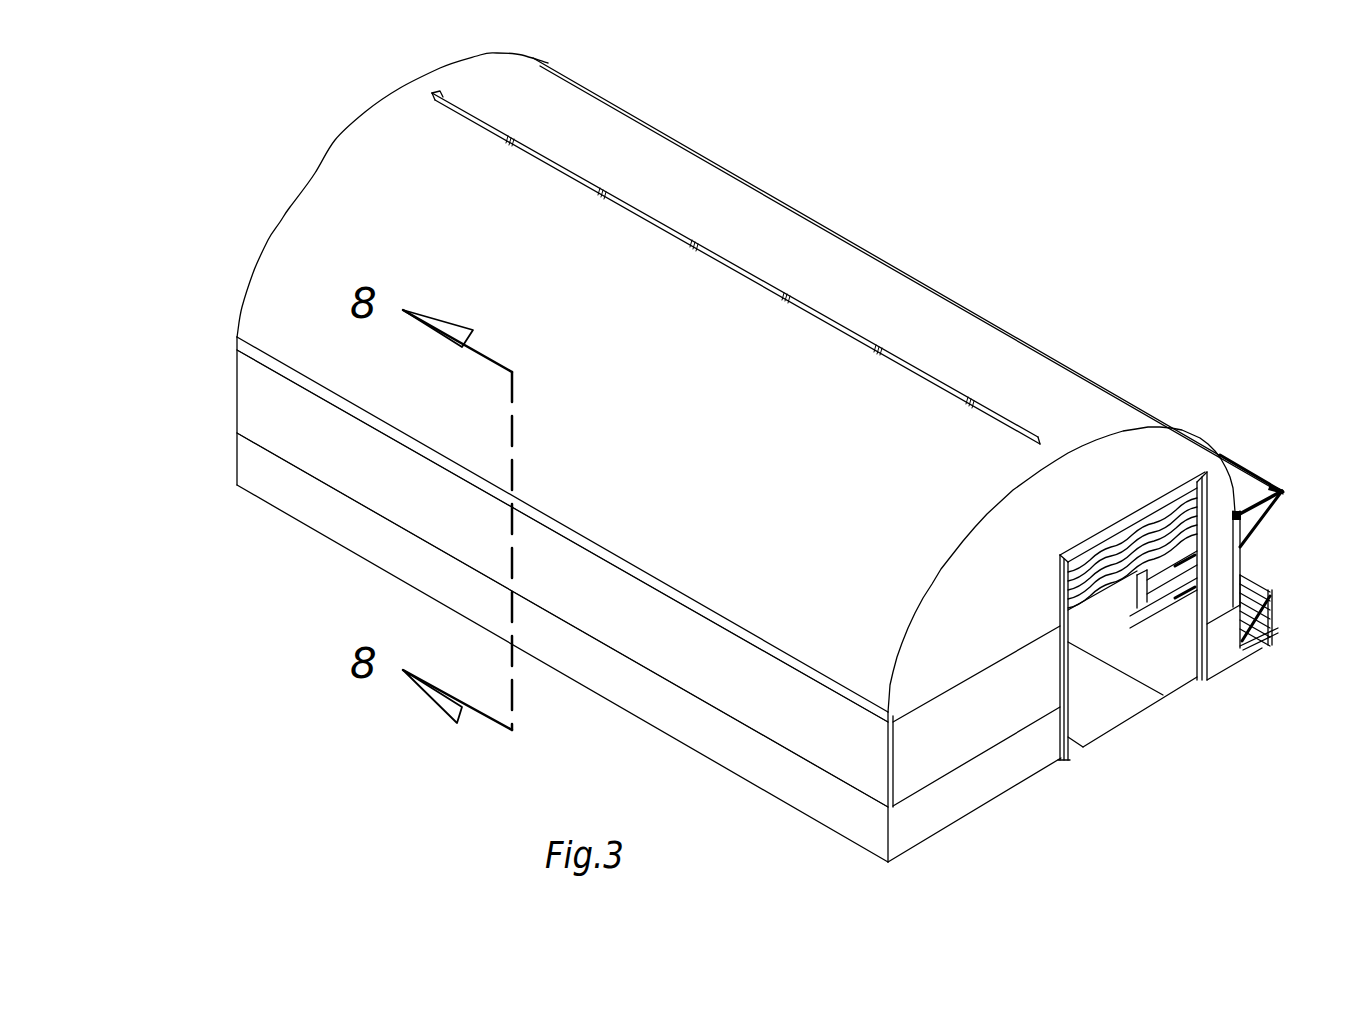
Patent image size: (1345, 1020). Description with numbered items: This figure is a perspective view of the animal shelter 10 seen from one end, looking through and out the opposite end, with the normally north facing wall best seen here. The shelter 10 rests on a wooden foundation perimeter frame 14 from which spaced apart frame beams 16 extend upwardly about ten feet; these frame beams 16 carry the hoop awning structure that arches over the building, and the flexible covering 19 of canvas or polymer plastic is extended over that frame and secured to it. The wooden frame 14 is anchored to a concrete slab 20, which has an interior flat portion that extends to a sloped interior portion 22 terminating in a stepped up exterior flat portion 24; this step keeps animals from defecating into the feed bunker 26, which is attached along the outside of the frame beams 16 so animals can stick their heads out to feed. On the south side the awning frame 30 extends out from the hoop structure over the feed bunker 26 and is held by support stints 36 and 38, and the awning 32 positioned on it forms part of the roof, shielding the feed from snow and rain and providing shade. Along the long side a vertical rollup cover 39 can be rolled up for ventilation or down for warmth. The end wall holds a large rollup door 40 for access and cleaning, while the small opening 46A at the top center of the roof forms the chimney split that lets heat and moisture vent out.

The animal shelter 10 is at (1002, 165).
The wooden foundation perimeter frame 14 is at (1187, 612).
The frame beams 16 is at (1135, 592).
The covering 19 is at (290, 229).
The concrete slab 20 is at (1130, 708).
The sloped interior portion 22 is at (1150, 668).
The stepped up exterior flat portion 24 is at (1255, 635).
The feed bunker 26 is at (1260, 593).
The awning frame 30 is at (1262, 484).
The awning 32 is at (1237, 465).
The support stint 36 is at (1253, 510).
The support stint 38 is at (1248, 537).
The vertical rollup cover 39 is at (252, 407).
The rollup door 40 is at (1082, 583).
The smaller opening 46A is at (433, 91).